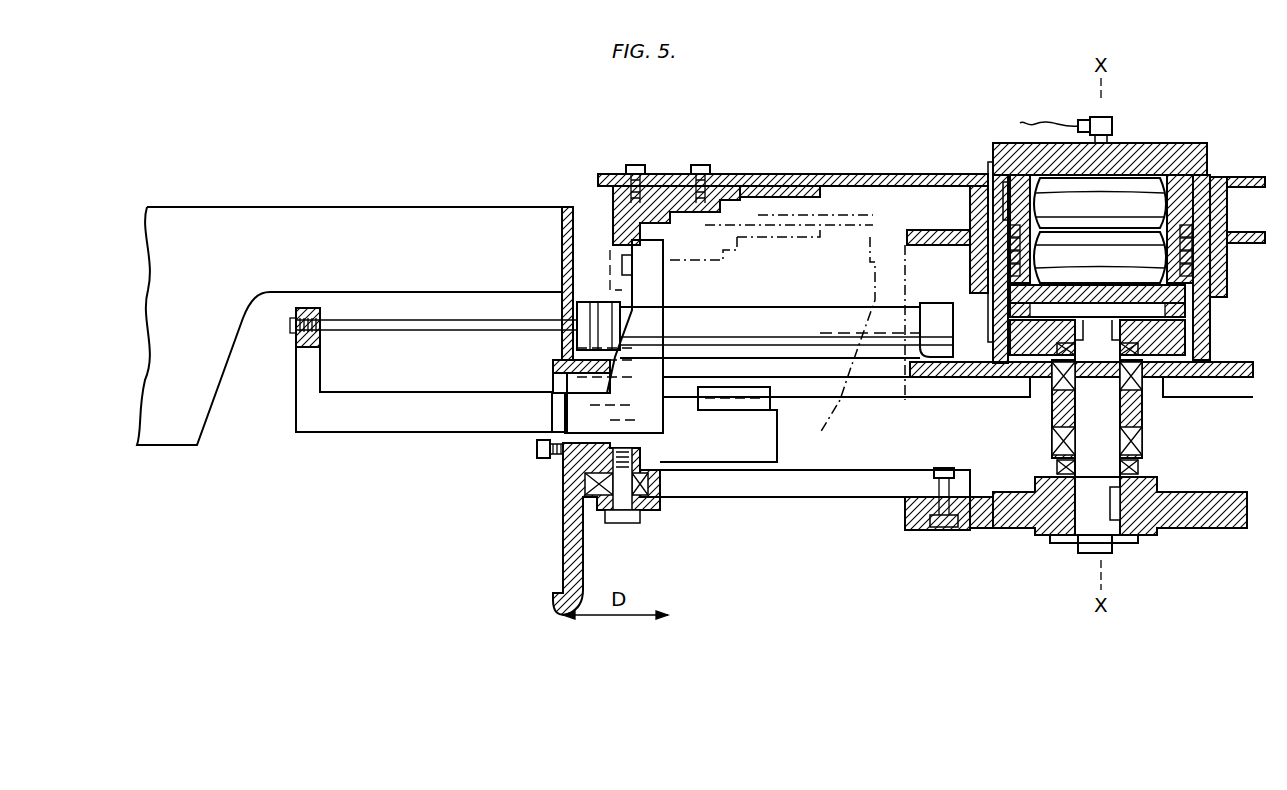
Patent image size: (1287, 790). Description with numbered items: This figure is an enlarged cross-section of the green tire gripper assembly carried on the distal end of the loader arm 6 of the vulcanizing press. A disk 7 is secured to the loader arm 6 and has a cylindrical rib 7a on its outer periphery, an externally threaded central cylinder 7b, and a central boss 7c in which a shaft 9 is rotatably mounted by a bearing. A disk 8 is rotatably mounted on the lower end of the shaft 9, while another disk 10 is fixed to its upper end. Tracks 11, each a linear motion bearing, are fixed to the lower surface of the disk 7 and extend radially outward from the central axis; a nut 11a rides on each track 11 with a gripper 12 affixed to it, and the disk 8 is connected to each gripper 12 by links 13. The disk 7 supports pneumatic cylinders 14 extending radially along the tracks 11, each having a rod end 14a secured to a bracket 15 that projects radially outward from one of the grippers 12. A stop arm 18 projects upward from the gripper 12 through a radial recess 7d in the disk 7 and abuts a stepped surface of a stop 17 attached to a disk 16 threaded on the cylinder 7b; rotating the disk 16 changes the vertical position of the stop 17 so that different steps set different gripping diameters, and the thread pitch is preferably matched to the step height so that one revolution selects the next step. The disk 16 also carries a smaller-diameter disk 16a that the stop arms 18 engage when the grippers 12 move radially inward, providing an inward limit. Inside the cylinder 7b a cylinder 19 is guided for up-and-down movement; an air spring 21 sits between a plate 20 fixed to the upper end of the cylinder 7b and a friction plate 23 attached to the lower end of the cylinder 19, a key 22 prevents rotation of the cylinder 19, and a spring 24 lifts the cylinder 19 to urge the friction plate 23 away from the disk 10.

The loader arm 6 is at (298, 207).
The disk 7 is at (553, 365).
The cylindrical rib 7a is at (562, 250).
The central cylinder 7b is at (988, 163).
The central boss 7c is at (1142, 440).
The radial recess 7d is at (786, 372).
The disk 8 is at (1157, 478).
The shaft 9 is at (1138, 418).
The disk 10 is at (1185, 333).
The track 11 is at (960, 398).
The nut 11a is at (565, 382).
The gripper 12 is at (585, 566).
The link 13 is at (812, 497).
The pneumatic cylinder 14 is at (798, 307).
The rod end 14a is at (292, 325).
The bracket 15 is at (483, 432).
The disk 16 is at (860, 174).
The smaller-diameter disk 16a is at (953, 245).
The stop 17 is at (613, 200).
The stop arm 18 is at (663, 295).
The cylinder 19 is at (1165, 206).
The plate 20 is at (1175, 143).
The air spring 21 is at (1040, 263).
The key 22 is at (1000, 207).
The friction plate 23 is at (1185, 308).
The spring 24 is at (1195, 238).